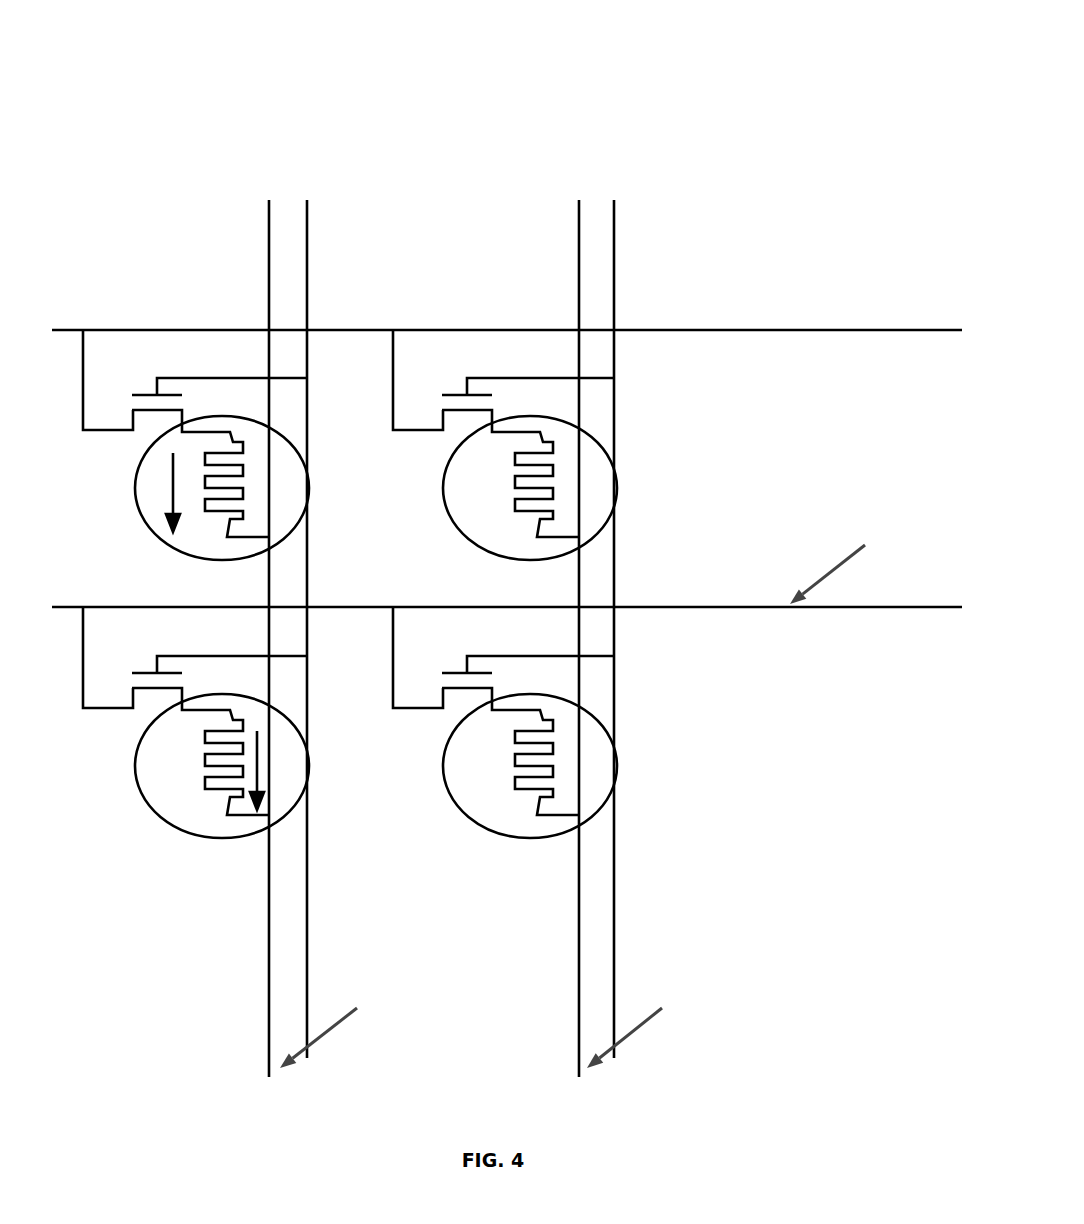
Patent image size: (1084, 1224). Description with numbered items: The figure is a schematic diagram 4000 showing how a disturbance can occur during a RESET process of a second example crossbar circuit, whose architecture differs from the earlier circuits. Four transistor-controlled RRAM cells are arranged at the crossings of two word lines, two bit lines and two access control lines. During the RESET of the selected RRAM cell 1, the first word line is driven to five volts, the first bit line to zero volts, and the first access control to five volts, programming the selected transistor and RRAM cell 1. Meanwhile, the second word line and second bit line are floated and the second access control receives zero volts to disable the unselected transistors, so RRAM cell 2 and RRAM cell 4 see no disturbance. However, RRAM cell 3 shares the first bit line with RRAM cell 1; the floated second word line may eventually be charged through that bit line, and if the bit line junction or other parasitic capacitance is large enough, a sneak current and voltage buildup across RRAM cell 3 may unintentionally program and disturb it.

The schematic diagram 4000 is at (508, 27).
The RRAM cell 1 is at (177, 447).
The RRAM cell 2 is at (497, 460).
The RRAM cell 3 is at (175, 739).
The RRAM cell 4 is at (497, 757).